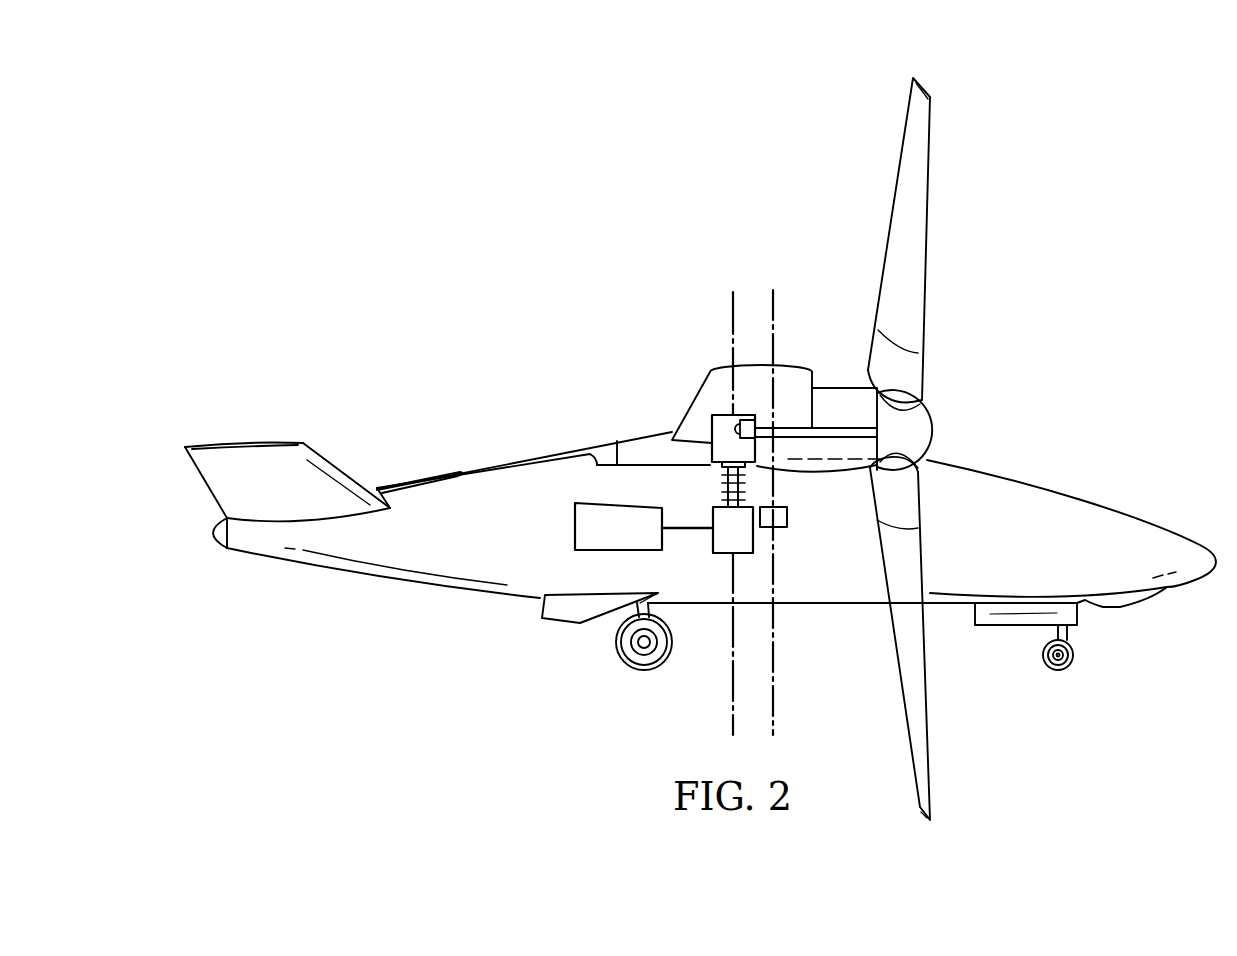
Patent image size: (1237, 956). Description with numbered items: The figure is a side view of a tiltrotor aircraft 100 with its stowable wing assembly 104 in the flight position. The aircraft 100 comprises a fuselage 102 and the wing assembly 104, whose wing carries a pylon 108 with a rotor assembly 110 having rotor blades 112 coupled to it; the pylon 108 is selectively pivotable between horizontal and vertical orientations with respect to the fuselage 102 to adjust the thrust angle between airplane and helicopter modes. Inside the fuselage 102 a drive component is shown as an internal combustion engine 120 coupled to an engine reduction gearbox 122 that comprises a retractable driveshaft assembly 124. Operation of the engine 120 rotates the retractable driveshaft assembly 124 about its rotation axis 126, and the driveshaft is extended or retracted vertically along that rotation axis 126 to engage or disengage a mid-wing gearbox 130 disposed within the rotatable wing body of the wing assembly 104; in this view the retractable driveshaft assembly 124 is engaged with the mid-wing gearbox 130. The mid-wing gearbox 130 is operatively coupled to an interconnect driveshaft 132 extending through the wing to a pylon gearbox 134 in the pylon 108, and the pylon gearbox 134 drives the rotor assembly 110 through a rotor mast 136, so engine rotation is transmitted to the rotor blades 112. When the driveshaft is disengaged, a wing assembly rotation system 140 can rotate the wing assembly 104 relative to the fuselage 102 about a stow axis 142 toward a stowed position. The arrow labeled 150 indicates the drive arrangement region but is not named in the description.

The aircraft 100 is at (1076, 108).
The fuselage 102 is at (833, 605).
The stowable wing assembly 104 is at (617, 436).
The pylon 108 is at (848, 387).
The rotor assembly 110 is at (945, 432).
The rotor blades 112 is at (927, 227).
The internal combustion engine 120 is at (575, 530).
The engine reduction gearbox 122 is at (712, 540).
The retractable driveshaft assembly 124 is at (722, 483).
The rotation axis 126 is at (730, 717).
The mid-wing gearbox 130 is at (722, 412).
The interconnect driveshaft 132 is at (712, 432).
The pylon gearbox 134 is at (750, 421).
The rotor mast 136 is at (823, 440).
The wing assembly rotation system 140 is at (787, 522).
The stow axis 142 is at (775, 308).
The propulsion system 150 is at (800, 575).